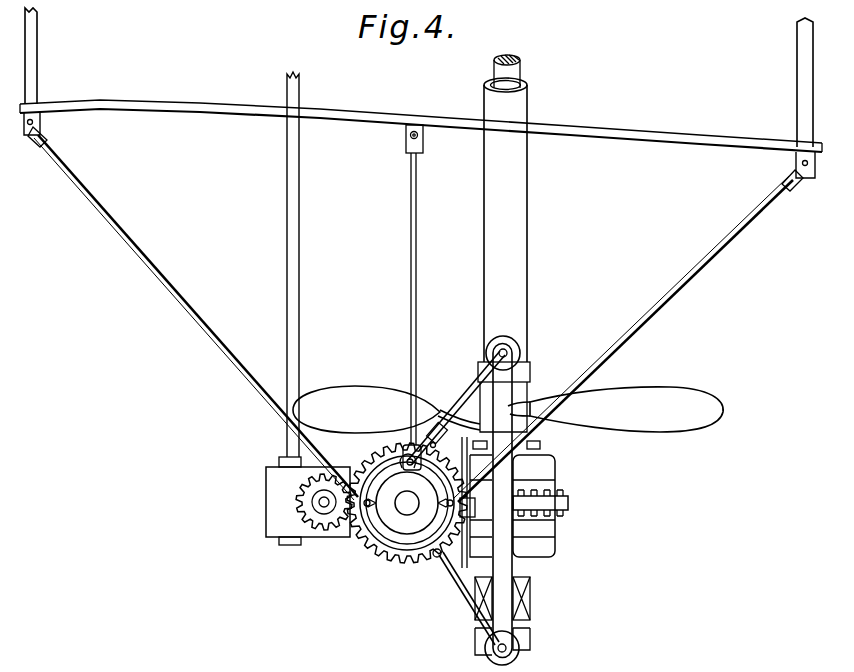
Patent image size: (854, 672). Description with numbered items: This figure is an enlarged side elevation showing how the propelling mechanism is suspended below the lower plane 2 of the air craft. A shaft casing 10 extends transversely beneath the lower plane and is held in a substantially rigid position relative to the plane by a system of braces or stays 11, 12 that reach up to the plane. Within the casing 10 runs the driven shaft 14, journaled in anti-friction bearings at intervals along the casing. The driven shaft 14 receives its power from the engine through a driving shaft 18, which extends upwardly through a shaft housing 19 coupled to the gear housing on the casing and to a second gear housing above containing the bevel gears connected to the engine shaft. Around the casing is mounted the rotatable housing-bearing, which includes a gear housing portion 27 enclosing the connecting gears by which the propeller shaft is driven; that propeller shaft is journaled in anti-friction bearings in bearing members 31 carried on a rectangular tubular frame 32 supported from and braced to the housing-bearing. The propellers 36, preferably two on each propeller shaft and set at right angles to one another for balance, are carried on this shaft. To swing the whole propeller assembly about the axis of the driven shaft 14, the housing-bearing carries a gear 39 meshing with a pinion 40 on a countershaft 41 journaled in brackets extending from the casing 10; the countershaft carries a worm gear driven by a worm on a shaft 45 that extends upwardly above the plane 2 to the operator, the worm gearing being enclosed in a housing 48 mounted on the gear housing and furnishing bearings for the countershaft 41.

The planes 2 is at (656, 134).
The shaft casing 10 is at (408, 494).
The braces or stays 11 is at (184, 291).
The braces or stays 12 is at (411, 298).
The driven shaft 14 is at (407, 503).
The driving shaft 18 is at (514, 80).
The shaft housing 19 is at (505, 220).
The gear housing portion 27 is at (548, 493).
The bearing members 31 is at (529, 375).
The rectangular tubular frame 32 is at (510, 404).
The propellers 36 is at (672, 430).
The gear 39 is at (418, 560).
The pinion 40 is at (309, 500).
The countershaft 41 is at (318, 506).
The shaft 45 is at (286, 318).
The housing 48 is at (268, 484).